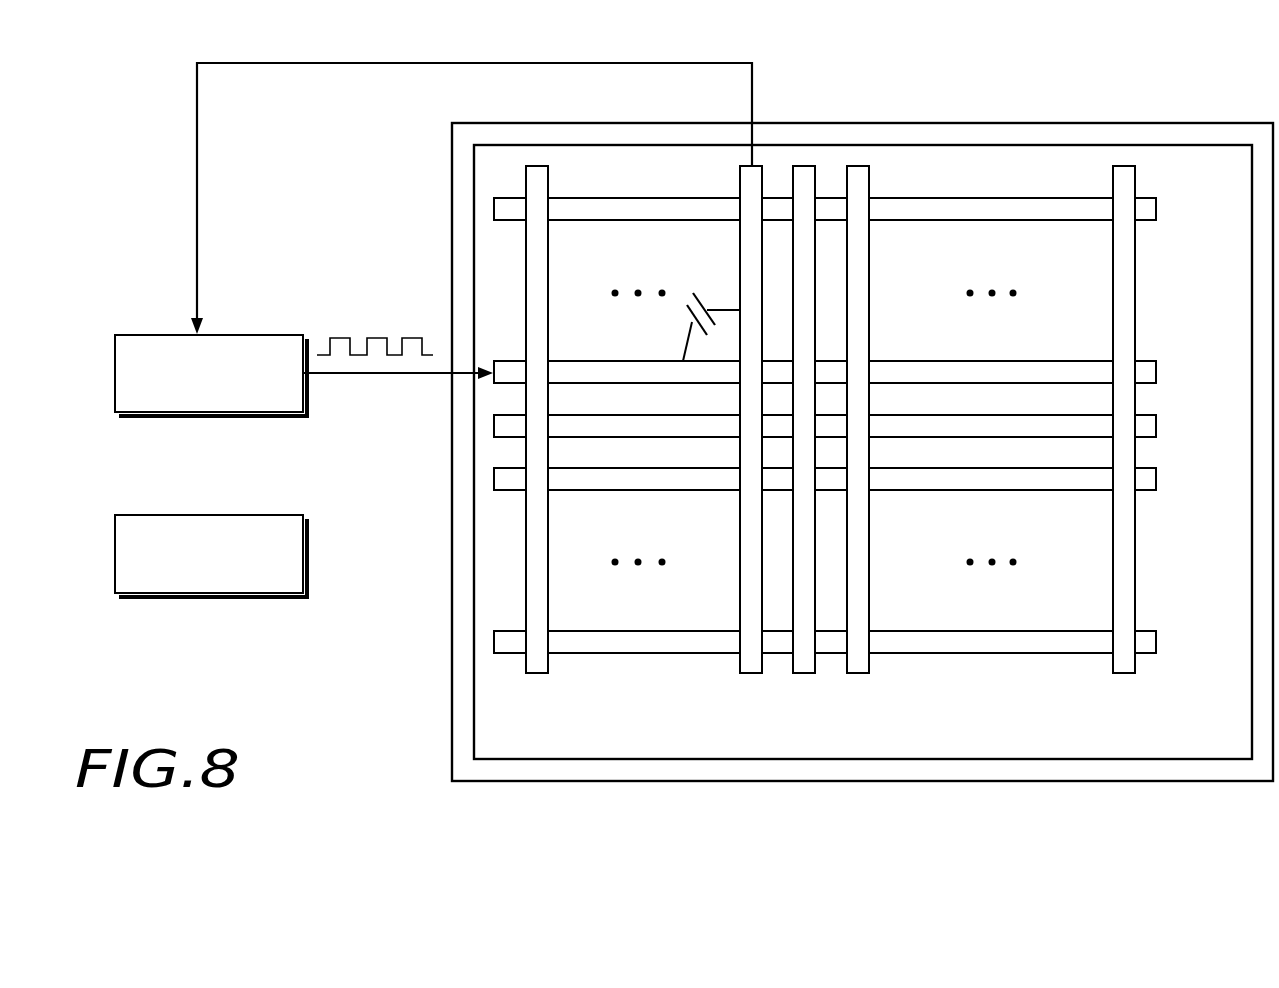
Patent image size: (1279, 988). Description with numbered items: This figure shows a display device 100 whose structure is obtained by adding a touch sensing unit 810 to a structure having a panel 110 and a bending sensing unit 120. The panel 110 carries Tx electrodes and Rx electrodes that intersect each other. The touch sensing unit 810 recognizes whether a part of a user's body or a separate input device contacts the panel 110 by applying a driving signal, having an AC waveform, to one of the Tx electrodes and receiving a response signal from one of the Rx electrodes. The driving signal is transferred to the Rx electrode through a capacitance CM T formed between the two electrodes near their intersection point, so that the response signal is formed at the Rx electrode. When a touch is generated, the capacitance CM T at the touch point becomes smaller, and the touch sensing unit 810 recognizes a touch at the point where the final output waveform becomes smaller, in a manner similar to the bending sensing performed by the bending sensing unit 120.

The display device 100 is at (164, 128).
The panel 110 is at (1028, 122).
The touch sensing unit 810 is at (236, 412).
The bending sensing unit 120 is at (236, 593).
The mutual capacitance CM is at (707, 300).
The touch T is at (684, 325).